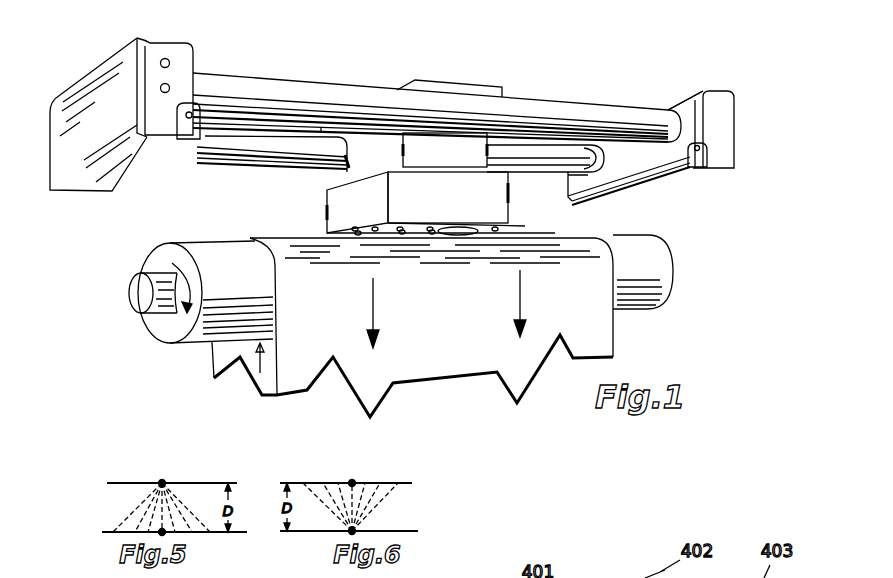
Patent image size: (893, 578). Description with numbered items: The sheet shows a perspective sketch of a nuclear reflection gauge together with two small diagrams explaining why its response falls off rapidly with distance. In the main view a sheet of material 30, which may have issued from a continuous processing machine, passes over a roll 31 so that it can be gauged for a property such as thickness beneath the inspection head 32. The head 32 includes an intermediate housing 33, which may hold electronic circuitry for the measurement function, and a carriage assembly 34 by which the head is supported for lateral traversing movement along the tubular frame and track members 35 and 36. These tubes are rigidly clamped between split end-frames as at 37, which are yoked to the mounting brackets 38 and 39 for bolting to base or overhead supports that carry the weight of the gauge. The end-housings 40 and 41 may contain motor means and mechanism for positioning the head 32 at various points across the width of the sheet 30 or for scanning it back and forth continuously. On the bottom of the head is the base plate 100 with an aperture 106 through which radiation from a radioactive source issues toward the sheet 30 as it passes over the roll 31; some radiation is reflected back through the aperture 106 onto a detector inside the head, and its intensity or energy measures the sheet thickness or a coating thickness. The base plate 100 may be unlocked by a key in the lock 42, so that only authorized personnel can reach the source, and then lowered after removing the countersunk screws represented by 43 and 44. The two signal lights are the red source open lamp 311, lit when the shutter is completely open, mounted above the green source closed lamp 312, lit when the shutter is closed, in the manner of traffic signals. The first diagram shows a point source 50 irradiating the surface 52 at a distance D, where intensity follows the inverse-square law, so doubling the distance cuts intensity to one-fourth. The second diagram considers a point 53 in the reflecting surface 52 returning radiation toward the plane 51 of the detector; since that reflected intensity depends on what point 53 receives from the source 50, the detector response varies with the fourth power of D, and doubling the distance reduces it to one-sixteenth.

In FIG. 1, the sheet of material 30 is at (210, 367).
In FIG. 1, the roll 31 is at (143, 332).
In FIG. 1, the inspection head 32 is at (327, 210).
In FIG. 1, the intermediate housing 33 is at (333, 175).
In FIG. 1, the carriage assembly 34 is at (487, 85).
In FIG. 1, the tubular frame and track member 35 is at (263, 167).
In FIG. 1, the tubular frame and track member 36 is at (320, 82).
In FIG. 1, the split end-frame 37 is at (703, 93).
In FIG. 1, the mounting bracket 38 is at (132, 166).
In FIG. 1, the mounting bracket 39 is at (693, 172).
In FIG. 1, the end-housing 40 is at (100, 65).
In FIG. 1, the end-housing 41 is at (734, 118).
In FIG. 1, the lock 42 is at (358, 238).
In FIG. 1, the countersunk screw 43 is at (402, 236).
In FIG. 1, the countersunk screw 44 is at (432, 236).
In FIG. 1, the base plate 100 is at (515, 231).
In FIG. 1, the aperture 106 is at (457, 226).
In FIG. 1, the source open lamp 311 is at (173, 62).
In FIG. 1, the source closed lamp 312 is at (173, 88).
In FIG. 5, the point source 50 is at (165, 481).
In FIG. 6, the point source 50 is at (355, 482).
In FIG. 5, the plane of the detector 51 is at (118, 483).
In FIG. 6, the plane of the detector 51 is at (403, 482).
In FIG. 5, the surface 52 is at (122, 533).
In FIG. 6, the surface 52 is at (395, 532).
In FIG. 5, the point 53 is at (165, 533).
In FIG. 6, the point 53 is at (348, 533).